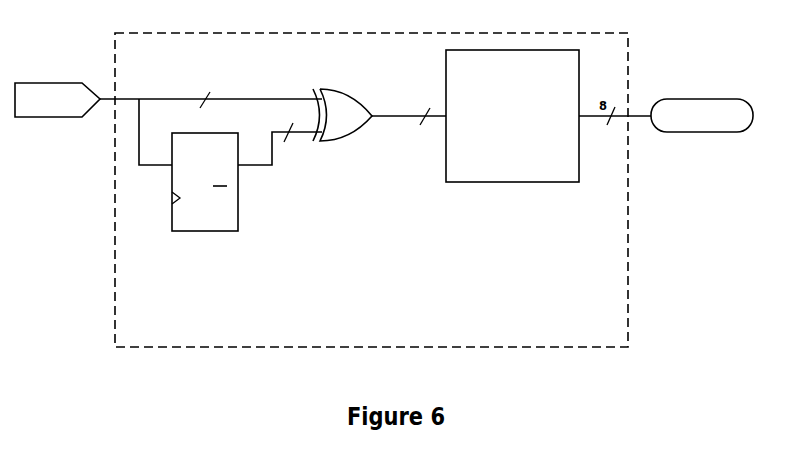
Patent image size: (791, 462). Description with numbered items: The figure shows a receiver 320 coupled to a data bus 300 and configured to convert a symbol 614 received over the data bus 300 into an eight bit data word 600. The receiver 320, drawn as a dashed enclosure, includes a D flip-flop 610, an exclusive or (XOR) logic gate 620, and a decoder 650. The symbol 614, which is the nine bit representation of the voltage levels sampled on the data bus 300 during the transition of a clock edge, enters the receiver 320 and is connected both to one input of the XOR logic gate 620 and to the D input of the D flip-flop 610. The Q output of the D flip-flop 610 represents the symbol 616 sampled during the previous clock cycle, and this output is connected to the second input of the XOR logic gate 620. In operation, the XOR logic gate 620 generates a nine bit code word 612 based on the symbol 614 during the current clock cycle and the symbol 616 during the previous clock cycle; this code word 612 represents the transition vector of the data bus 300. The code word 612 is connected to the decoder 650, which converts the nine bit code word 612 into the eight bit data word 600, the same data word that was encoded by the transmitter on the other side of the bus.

The data bus 300 is at (57, 100).
The receiver 320 is at (371, 190).
The data word 600 is at (712, 99).
The D flip-flop 610 is at (240, 229).
The code word 612 is at (380, 114).
The symbol 614 is at (242, 99).
The symbol during the previous clock cycle 616 is at (262, 167).
The exclusive or (XOR) logic gate 620 is at (323, 140).
The decoder 650 is at (512, 116).